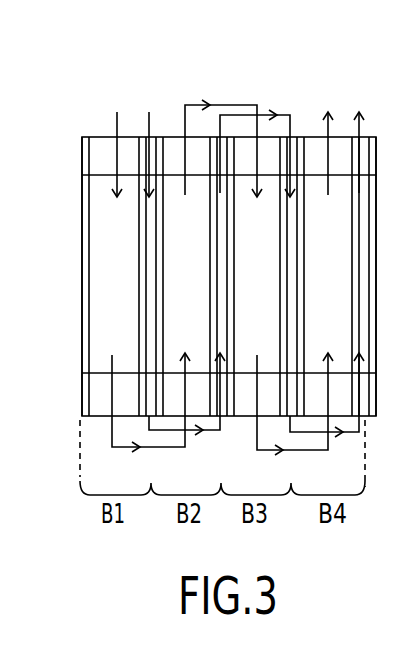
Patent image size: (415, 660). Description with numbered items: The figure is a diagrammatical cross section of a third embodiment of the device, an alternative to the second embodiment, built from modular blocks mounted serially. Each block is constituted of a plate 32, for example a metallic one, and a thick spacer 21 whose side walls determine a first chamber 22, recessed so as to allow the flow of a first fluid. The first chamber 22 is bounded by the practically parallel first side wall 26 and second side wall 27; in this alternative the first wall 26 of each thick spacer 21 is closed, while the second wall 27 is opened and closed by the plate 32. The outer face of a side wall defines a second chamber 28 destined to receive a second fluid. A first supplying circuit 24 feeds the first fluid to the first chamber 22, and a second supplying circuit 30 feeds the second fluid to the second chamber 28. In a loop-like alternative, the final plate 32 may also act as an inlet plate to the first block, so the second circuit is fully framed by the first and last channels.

The thick spacer 21 is at (106, 147).
The first chamber 22 is at (127, 237).
The first supplying circuit 24 is at (117, 112).
The first side wall 26 is at (138, 317).
The second side wall 27 is at (93, 262).
The second chamber 28 is at (147, 294).
The second supplying circuit 30 is at (149, 112).
The plate 32 is at (87, 207).